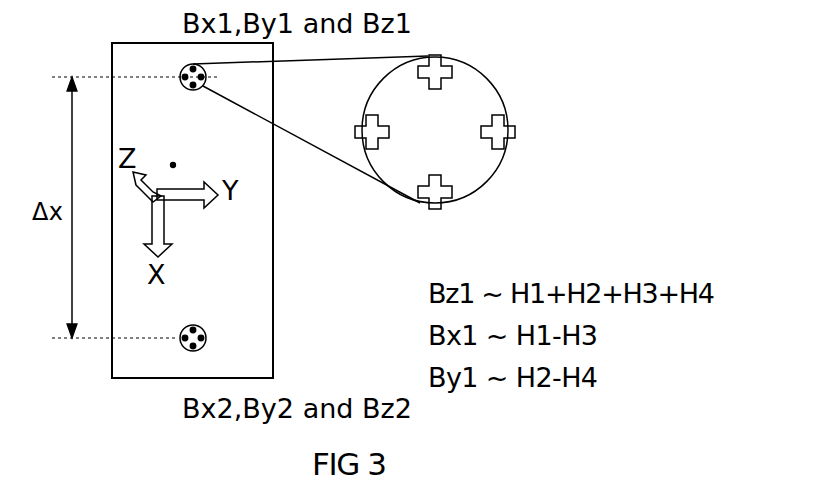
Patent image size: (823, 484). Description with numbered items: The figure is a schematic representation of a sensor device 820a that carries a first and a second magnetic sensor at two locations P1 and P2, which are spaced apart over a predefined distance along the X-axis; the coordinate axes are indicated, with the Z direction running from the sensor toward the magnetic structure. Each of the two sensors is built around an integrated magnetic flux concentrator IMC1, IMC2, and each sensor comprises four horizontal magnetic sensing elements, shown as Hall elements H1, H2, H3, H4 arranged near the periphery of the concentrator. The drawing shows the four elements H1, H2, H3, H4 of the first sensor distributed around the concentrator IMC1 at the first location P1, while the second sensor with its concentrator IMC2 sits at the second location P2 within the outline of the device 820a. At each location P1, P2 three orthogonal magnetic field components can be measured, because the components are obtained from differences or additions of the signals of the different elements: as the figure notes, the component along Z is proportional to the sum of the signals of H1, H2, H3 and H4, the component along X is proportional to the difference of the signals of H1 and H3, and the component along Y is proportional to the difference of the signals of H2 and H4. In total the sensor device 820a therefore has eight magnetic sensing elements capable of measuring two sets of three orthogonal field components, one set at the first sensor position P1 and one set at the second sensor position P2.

The sensor device 820a is at (275, 279).
The first sensor location P1 is at (182, 91).
The second sensor location P2 is at (211, 346).
The integrated magnetic flux concentrator IMC1 is at (475, 155).
The integrated magnetic flux concentrator IMC2 is at (197, 324).
The Hall element H1 is at (452, 66).
The Hall element H2 is at (508, 130).
The Hall element H3 is at (460, 200).
The Hall element H4 is at (355, 128).